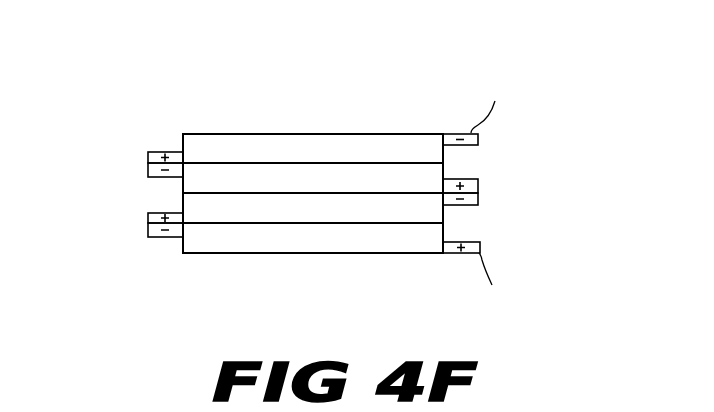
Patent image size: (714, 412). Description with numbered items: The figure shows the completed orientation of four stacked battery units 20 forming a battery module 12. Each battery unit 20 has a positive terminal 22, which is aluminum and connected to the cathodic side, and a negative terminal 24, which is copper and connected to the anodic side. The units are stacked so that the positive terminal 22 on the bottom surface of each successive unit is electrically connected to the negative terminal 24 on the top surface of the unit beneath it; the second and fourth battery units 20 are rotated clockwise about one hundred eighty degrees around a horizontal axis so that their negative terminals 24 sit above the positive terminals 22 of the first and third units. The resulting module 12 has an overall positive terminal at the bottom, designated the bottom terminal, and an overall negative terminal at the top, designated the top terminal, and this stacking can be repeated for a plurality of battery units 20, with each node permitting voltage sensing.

The battery module 12 is at (381, 108).
The battery unit 20 is at (230, 142).
The positive terminal 22 is at (165, 156).
The negative terminal 24 is at (150, 170).